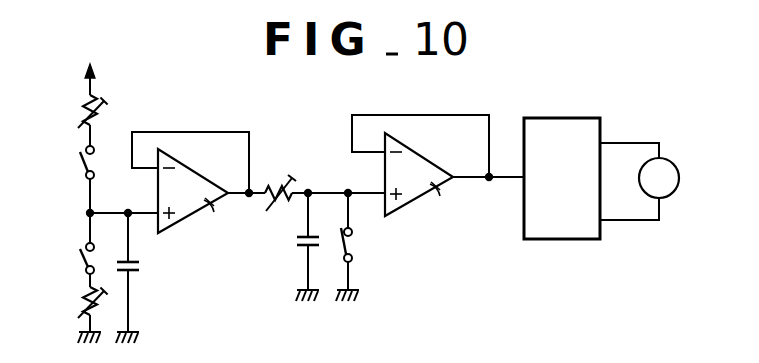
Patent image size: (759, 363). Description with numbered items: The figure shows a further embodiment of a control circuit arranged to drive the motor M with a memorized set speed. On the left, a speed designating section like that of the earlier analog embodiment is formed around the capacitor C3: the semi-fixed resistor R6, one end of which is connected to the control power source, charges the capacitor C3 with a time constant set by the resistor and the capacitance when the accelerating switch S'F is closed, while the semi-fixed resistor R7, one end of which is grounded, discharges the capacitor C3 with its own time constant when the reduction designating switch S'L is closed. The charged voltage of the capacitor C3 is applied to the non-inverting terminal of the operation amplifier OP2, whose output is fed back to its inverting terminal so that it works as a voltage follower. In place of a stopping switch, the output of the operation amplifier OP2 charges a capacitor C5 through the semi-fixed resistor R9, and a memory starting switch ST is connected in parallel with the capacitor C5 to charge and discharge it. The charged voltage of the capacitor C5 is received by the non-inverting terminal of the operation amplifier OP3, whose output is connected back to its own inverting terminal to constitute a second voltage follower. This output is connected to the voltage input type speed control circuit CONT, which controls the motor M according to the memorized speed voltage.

The semi-fixed resistor R6 is at (79, 111).
The accelerating switch S'F is at (69, 163).
The reduction designating switch S'L is at (66, 258).
The semi-fixed resistor R7 is at (75, 302).
The capacitor C3 is at (144, 275).
The operation amplifier OP2 is at (190, 186).
The semi-fixed resistor R9 is at (277, 179).
The capacitor C5 is at (288, 248).
The memory starting switch ST is at (364, 245).
The operation amplifier OP3 is at (420, 169).
The voltage input type speed control circuit CONT is at (562, 178).
The motor M is at (639, 181).